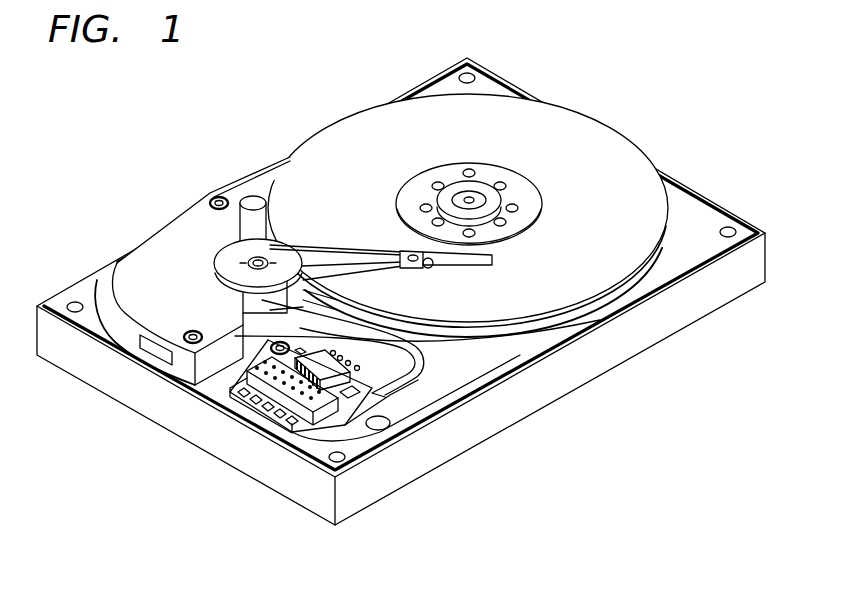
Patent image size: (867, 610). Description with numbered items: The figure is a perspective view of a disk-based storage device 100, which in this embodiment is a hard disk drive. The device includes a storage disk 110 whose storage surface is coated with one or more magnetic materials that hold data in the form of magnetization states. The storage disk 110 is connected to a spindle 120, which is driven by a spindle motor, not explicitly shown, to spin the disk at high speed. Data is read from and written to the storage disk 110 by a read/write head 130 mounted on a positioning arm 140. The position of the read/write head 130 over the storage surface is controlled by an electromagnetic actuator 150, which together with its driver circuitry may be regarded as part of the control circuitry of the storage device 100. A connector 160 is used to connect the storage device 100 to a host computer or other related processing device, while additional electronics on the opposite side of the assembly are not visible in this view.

The disk-based storage device 100 is at (170, 106).
The storage disk 110 is at (589, 134).
The spindle 120 is at (490, 195).
The read/write head 130 is at (460, 261).
The positioning arm 140 is at (326, 252).
The electromagnetic actuator 150 is at (152, 250).
The connector 160 is at (273, 397).